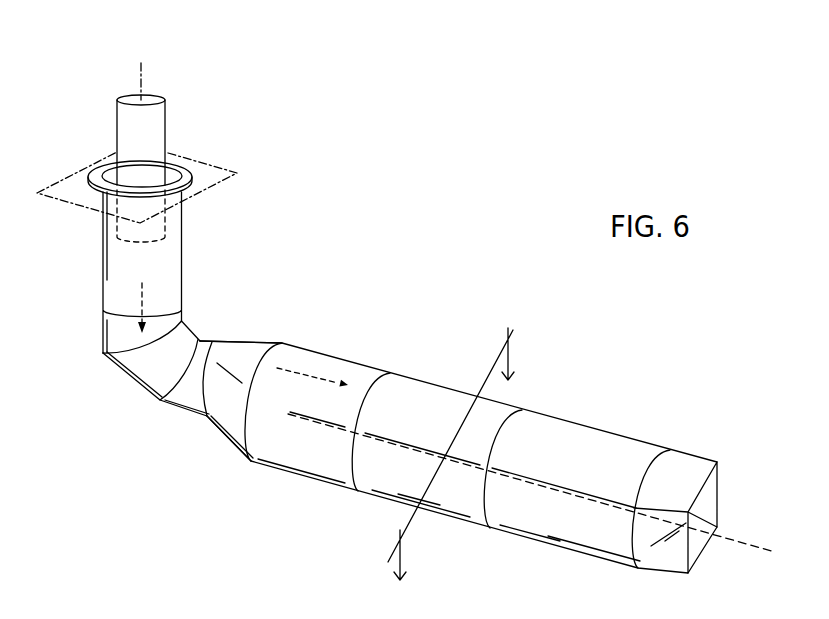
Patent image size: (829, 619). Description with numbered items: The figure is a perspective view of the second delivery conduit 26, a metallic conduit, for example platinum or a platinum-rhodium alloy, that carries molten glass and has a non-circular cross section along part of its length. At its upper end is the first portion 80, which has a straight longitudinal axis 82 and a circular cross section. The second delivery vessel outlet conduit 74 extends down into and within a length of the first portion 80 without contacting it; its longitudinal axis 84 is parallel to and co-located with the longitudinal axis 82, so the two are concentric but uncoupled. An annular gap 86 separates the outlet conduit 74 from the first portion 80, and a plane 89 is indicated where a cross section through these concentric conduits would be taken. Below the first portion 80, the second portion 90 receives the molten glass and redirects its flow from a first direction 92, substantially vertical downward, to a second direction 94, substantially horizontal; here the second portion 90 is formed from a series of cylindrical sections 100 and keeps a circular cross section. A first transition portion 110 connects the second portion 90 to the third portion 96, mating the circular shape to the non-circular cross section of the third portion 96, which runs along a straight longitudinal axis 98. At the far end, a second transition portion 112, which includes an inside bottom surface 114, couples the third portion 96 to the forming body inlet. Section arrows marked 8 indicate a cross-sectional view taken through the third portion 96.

The section line 8- 8 is at (451, 467).
The second delivery conduit 26 is at (369, 338).
The second delivery vessel outlet conduit 74 is at (166, 130).
The first portion 80 is at (183, 260).
The longitudinal axis 82 is at (177, 78).
The longitudinal axis 84 is at (143, 82).
The annular gap 86 is at (106, 174).
The plane 89 is at (210, 165).
The second portion 90 is at (195, 324).
The first direction 92 is at (143, 293).
The second direction 94 is at (308, 374).
The third portion 96 is at (580, 425).
The longitudinal axis 98 is at (740, 535).
The cylindrical sections 100 is at (103, 330).
The first transition portion 110 is at (253, 340).
The second transition portion 112 is at (695, 451).
The inside bottom surface 114 is at (703, 545).